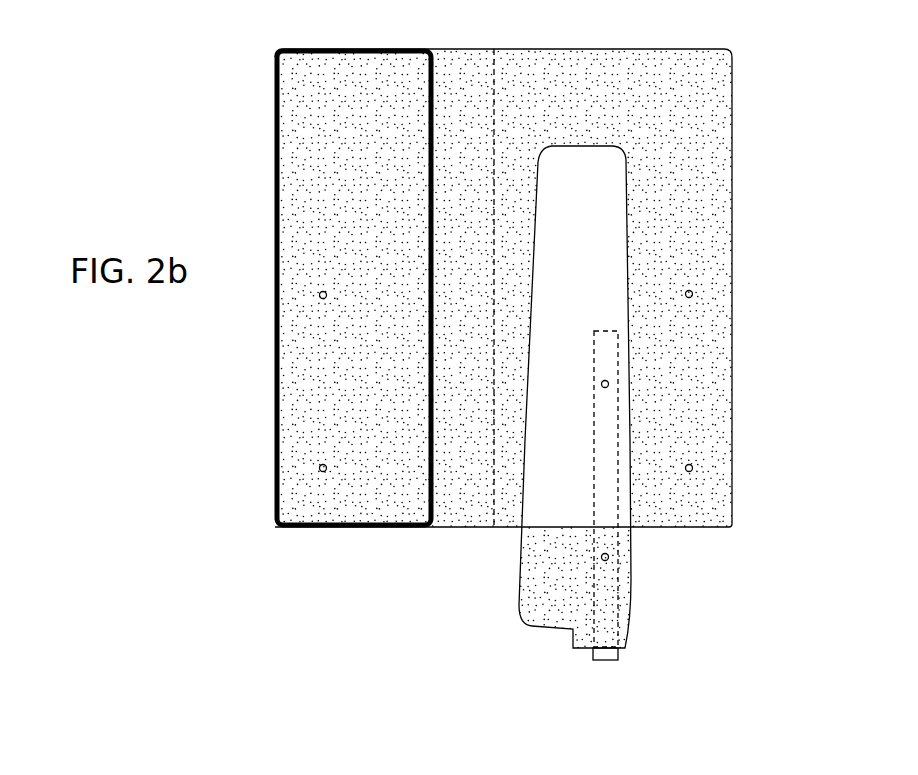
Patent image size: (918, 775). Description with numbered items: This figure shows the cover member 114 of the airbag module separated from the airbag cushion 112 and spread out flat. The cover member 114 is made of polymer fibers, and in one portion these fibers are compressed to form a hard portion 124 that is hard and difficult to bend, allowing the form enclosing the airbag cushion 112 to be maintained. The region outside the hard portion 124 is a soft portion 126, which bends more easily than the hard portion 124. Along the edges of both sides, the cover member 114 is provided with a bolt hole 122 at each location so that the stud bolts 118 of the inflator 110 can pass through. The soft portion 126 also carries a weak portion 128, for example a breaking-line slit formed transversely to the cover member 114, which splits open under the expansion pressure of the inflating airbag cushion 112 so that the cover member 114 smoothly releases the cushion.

The inflator 110 is at (619, 341).
The airbag cushion 112 is at (623, 150).
The cover member 114 is at (272, 128).
The stud bolts 118 is at (610, 384).
The bolt hole 122 is at (694, 292).
The hard portion 124 is at (433, 43).
The soft portion 126 is at (730, 43).
The weak portion 128 is at (493, 480).